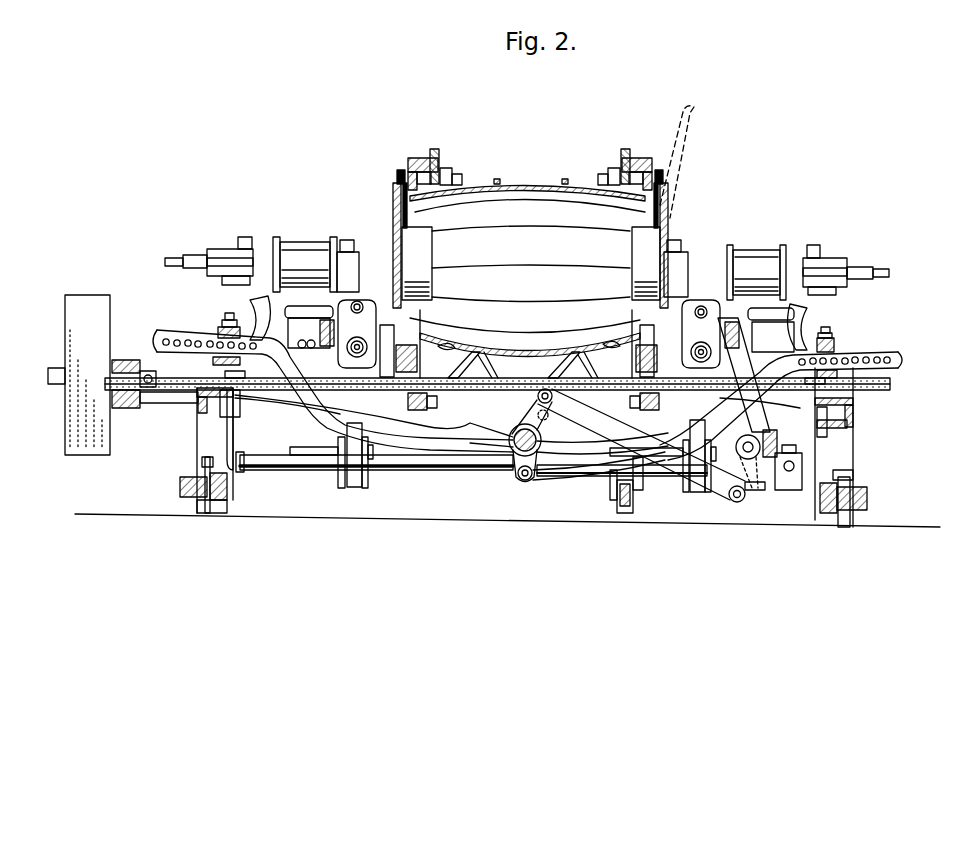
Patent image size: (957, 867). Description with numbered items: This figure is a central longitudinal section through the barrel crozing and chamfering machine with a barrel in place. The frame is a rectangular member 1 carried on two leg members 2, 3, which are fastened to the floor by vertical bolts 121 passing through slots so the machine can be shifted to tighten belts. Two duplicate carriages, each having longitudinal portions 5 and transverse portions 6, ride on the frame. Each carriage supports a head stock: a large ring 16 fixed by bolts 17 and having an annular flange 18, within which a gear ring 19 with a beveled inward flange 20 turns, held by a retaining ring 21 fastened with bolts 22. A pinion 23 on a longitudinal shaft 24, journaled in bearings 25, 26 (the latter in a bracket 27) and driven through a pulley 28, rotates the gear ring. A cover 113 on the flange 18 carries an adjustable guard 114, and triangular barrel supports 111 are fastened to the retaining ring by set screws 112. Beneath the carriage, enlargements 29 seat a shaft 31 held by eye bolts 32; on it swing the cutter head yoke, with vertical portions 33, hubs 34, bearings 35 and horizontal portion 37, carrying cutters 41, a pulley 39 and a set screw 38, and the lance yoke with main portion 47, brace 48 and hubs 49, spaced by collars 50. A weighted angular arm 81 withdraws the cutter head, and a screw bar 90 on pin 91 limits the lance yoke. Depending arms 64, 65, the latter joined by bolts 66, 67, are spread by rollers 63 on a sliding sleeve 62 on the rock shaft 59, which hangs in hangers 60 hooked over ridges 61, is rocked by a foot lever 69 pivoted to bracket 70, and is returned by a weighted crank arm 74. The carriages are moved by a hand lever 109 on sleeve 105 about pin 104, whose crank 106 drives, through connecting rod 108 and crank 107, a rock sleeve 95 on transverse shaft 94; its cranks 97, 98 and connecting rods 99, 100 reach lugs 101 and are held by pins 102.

The rectangular frame member 1 is at (290, 404).
The leg member 2 is at (228, 501).
The leg member 3 is at (850, 481).
The longitudinal portion of the carriage 5 is at (537, 332).
The transverse portion of the carriage 6 is at (222, 332).
The large ring 16 is at (418, 158).
The bolts 17 is at (388, 318).
The annular flange 18 is at (397, 174).
The gear ring 19 is at (444, 172).
The inwardly extending flange 20 is at (527, 271).
The retaining ring 21 is at (437, 151).
The bolts 22 is at (462, 181).
The pinion 23 is at (425, 410).
The longitudinal shaft 24 is at (527, 393).
The bearing 25 is at (531, 401).
The bearing 26 is at (124, 360).
The bracket 27 is at (155, 400).
The pulley 28 is at (87, 375).
The enlargements 29 is at (526, 343).
The shaft 31 is at (213, 361).
The eye bolts 32 is at (228, 314).
The vertical portions of the cutter head yoke 33 is at (528, 328).
The hubs 34 is at (515, 405).
The bearings 35 is at (528, 261).
The horizontal portion of the yoke 37 is at (538, 305).
The set screw 38 is at (193, 256).
The pulley 39 is at (529, 268).
The cutters 41 is at (732, 339).
The main portion of the lance yoke 47 is at (332, 333).
The strengthening brace 48 is at (255, 322).
The hubs 49 is at (525, 371).
The collars 50 is at (533, 383).
The rock shaft 59 is at (471, 472).
The swinging hangers 60 is at (235, 441).
The vertical ridges 61 is at (200, 417).
The sliding sleeve 62 is at (375, 453).
The rollers 63 is at (338, 452).
The depending arm 64 is at (347, 433).
The depending arm 65 is at (542, 475).
The bolt 66 is at (556, 375).
The bolt 67 is at (352, 306).
The foot lever 69 is at (617, 506).
The bracket 70 is at (617, 490).
The weighted crank arm 74 is at (790, 490).
The angular arm 81 is at (342, 282).
The screw bar 90 is at (529, 338).
The pin 91 is at (762, 330).
The transverse shaft 94 is at (509, 434).
The rock sleeve 95 is at (553, 452).
The crank 97 is at (526, 481).
The crank 98 is at (553, 412).
The connecting rod 99 is at (599, 466).
The connecting rod 100 is at (374, 421).
The depending lugs 101 is at (875, 378).
The pins 102 is at (235, 343).
The laterally extending pin 104 is at (767, 493).
The sleeve 105 is at (778, 426).
The crank 106 is at (745, 499).
The crank 107 is at (530, 418).
The connecting rod 108 is at (641, 444).
The hand lever 109 is at (680, 217).
The adjustable barrel supports 111 is at (523, 369).
The set screws 112 is at (529, 336).
The cover 113 is at (393, 196).
The adjustable guard 114 is at (535, 263).
The vertical bolts 121 is at (203, 508).